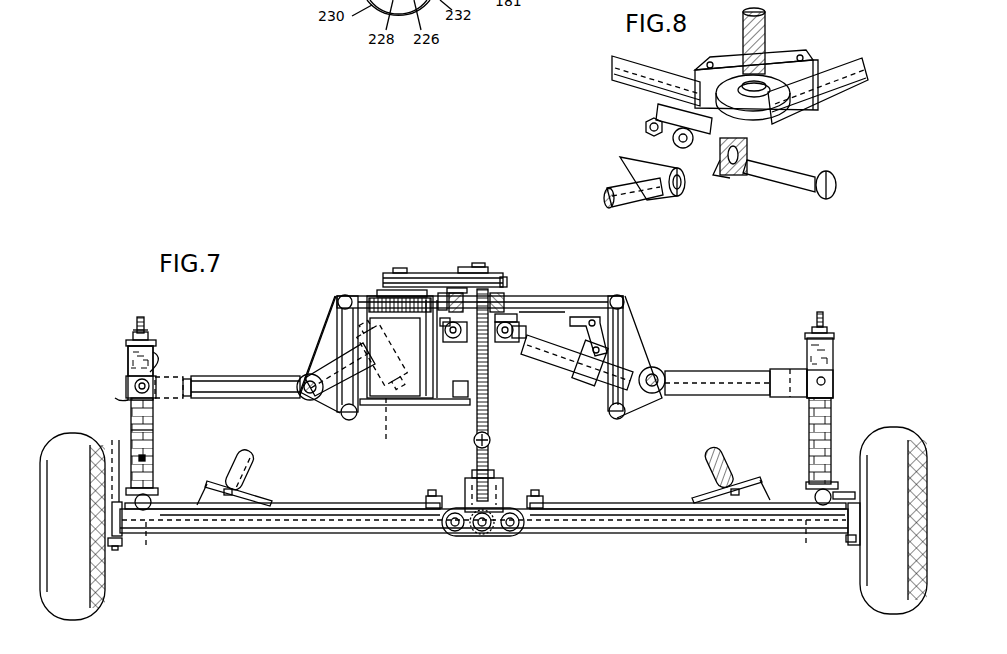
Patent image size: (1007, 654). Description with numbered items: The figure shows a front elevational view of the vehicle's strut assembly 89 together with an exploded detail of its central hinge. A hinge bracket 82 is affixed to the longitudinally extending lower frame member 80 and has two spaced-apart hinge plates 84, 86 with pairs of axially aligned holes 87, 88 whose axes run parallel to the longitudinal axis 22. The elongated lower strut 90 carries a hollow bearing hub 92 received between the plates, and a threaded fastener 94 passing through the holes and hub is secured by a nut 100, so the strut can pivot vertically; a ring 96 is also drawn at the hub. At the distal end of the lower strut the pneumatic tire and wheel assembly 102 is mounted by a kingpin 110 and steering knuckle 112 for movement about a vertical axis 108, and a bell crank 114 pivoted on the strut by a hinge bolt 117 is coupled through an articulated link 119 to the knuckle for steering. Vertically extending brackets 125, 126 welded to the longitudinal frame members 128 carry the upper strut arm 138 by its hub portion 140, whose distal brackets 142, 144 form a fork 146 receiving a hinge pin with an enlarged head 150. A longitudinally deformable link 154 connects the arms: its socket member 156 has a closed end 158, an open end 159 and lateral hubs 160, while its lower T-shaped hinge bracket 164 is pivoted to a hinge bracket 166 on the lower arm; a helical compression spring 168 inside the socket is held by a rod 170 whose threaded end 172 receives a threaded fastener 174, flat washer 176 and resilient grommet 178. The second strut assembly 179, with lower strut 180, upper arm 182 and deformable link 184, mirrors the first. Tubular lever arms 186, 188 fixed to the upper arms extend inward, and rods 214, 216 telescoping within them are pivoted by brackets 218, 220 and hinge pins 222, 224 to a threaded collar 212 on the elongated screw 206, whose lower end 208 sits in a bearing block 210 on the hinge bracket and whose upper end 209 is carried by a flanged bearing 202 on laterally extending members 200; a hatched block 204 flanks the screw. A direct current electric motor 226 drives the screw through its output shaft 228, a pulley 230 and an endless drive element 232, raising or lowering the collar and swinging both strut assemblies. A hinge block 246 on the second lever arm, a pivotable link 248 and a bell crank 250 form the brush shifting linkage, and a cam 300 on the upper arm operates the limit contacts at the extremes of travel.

In FIG. 7, the longitudinal axis 22 is at (491, 438).
In FIG. 7, the lower frame member 80 is at (486, 540).
In FIG. 8, the lower frame member 80 is at (625, 72).
In FIG. 7, the hinge bracket 82 is at (496, 535).
In FIG. 8, the hinge bracket 82 is at (815, 128).
In FIG. 7, the hinge plate 84 is at (470, 534).
In FIG. 8, the hinge plate 84 is at (740, 178).
In FIG. 8, the hinge plate 86 is at (660, 108).
In FIG. 8, the hole 87 is at (686, 144).
In FIG. 8, the hole 88 is at (722, 170).
In FIG. 7, the strut assembly 89 is at (269, 322).
In FIG. 7, the lower strut 90 is at (388, 535).
In FIG. 8, the lower strut 90 is at (650, 192).
In FIG. 7, the bearing hub 92 is at (468, 532).
In FIG. 8, the bearing hub 92 is at (630, 158).
In FIG. 7, the threaded fastener 94 is at (450, 533).
In FIG. 8, the threaded fastener 94 is at (834, 195).
In FIG. 8, the ring 96 is at (677, 197).
In FIG. 8, the nut 100 is at (645, 126).
In FIG. 7, the pneumatic tire and wheel assembly 102 is at (84, 614).
In FIG. 7, the axis 108 is at (110, 440).
In FIG. 7, the kingpin 110 is at (119, 550).
In FIG. 7, the steering knuckle 112 is at (119, 440).
In FIG. 7, the bell crank 114 is at (430, 496).
In FIG. 7, the hinge bolt 117 is at (434, 497).
In FIG. 7, the articulated link 119 is at (360, 503).
In FIG. 7, the bracket 125 is at (334, 320).
In FIG. 7, the bracket 126 is at (350, 421).
In FIG. 7, the longitudinal frame member 128 is at (345, 295).
In FIG. 7, the upper strut arm 138 is at (269, 377).
In FIG. 7, the hub portion 140 is at (304, 398).
In FIG. 7, the bracket 142 is at (306, 376).
In FIG. 7, the bracket 144 is at (200, 379).
In FIG. 7, the fork 146 is at (203, 399).
In FIG. 7, the enlarged head 150 is at (160, 378).
In FIG. 7, the longitudinally deformable link 154 is at (154, 446).
In FIG. 7, the socket member 156 is at (128, 362).
In FIG. 7, the closed end 158 is at (152, 348).
In FIG. 7, the open end 159 is at (118, 398).
In FIG. 7, the cylindrical hubs 160 is at (126, 385).
In FIG. 7, the T-shaped hinge bracket 164 is at (158, 491).
In FIG. 7, the hinge bracket 166 is at (147, 548).
In FIG. 7, the helical compression spring 168 is at (154, 421).
In FIG. 7, the rod 170 is at (146, 459).
In FIG. 7, the threaded end 172 is at (143, 317).
In FIG. 7, the threaded fastener 174 is at (137, 330).
In FIG. 7, the flat washer 176 is at (128, 341).
In FIG. 7, the resilient grommet 178 is at (156, 354).
In FIG. 7, the second strut assembly 179 is at (737, 352).
In FIG. 7, the lower strut 180 is at (678, 530).
In FIG. 7, the upper arm 182 is at (752, 375).
In FIG. 7, the longitudinally deformable link 184 is at (834, 416).
In FIG. 7, the tubular lever arm 186 is at (337, 382).
In FIG. 7, the lever arm 188 is at (643, 362).
In FIG. 7, the laterally extending members 200 is at (545, 312).
In FIG. 7, the flanged bearing 202 is at (505, 277).
In FIG. 7, the block 204 is at (497, 293).
In FIG. 7, the screw 206 is at (491, 412).
In FIG. 8, the screw 206 is at (766, 28).
In FIG. 7, the lower end 208 is at (500, 478).
In FIG. 8, the lower end 208 is at (780, 72).
In FIG. 7, the upper end 209 is at (452, 278).
In FIG. 7, the bearing block 210 is at (476, 267).
In FIG. 8, the bearing block 210 is at (735, 55).
In FIG. 7, the threaded collar 212 is at (462, 342).
In FIG. 8, the threaded collar 212 is at (707, 62).
In FIG. 7, the rod 214 is at (455, 320).
In FIG. 7, the rod 216 is at (526, 335).
In FIG. 7, the bracket 218 is at (445, 320).
In FIG. 7, the bracket 220 is at (508, 342).
In FIG. 7, the hinge pin 222 is at (444, 350).
In FIG. 7, the hinge pin 224 is at (512, 320).
In FIG. 7, the direct current electric motor 226 is at (382, 320).
In FIG. 7, the output shaft 228 is at (398, 273).
In FIG. 7, the pulley 230 is at (440, 295).
In FIG. 7, the endless drive element 232 is at (463, 292).
In FIG. 7, the hinge block 246 is at (588, 386).
In FIG. 7, the pivotable link 248 is at (603, 330).
In FIG. 7, the bell crank 250 is at (594, 316).
In FIG. 7, the cam 300 is at (382, 385).